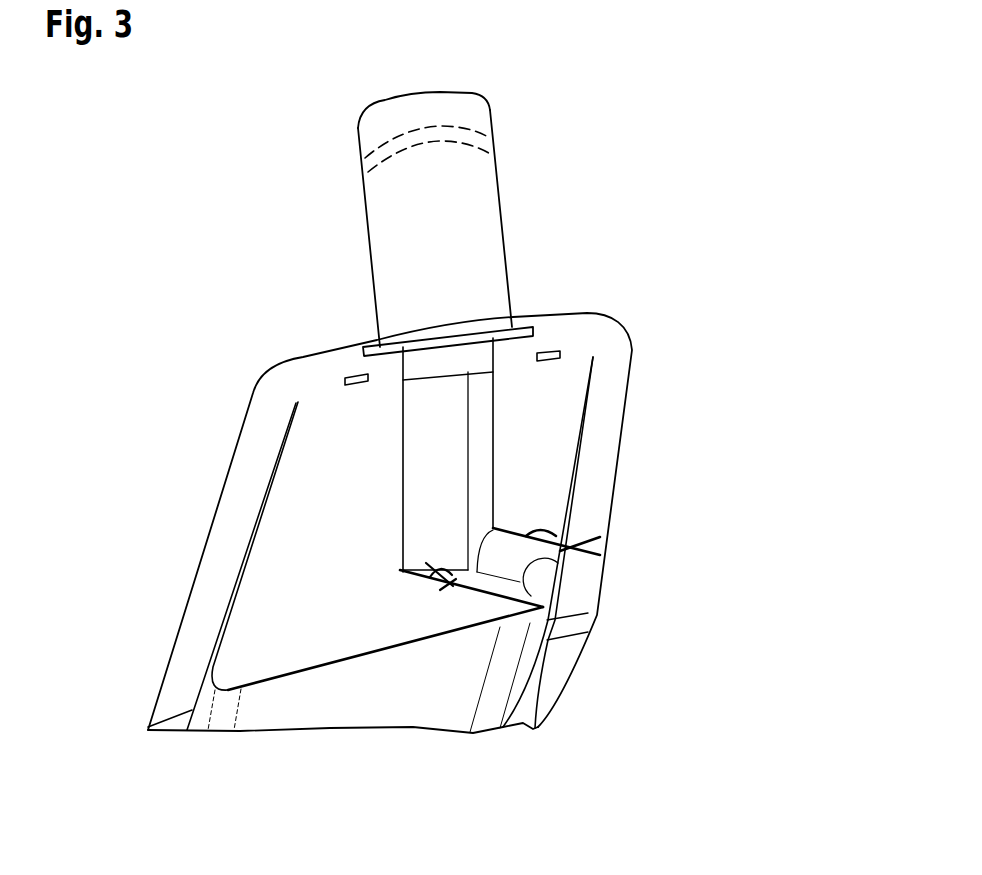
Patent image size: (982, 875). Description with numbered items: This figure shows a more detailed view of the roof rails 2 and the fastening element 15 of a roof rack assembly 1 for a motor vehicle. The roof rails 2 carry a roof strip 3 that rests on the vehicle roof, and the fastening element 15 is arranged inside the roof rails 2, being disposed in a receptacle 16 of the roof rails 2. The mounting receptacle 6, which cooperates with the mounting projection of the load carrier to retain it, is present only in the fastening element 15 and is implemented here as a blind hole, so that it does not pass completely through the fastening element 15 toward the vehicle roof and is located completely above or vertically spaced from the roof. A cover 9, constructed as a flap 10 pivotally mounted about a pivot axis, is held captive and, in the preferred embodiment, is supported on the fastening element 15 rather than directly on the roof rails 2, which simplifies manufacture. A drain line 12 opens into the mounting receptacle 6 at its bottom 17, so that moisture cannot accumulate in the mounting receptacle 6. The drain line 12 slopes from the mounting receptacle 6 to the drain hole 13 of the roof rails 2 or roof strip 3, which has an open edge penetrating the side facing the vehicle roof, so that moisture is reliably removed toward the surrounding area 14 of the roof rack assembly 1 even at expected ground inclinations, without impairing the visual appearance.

The roof rack assembly 1 is at (272, 236).
The roof rails 2 is at (621, 299).
The roof strip 3 is at (620, 362).
The mounting receptacle 6 is at (480, 473).
The cover 9 is at (487, 204).
The flap 10 is at (475, 110).
The drain line 12 is at (515, 548).
The drain hole 13 is at (575, 598).
The surrounding area 14 is at (632, 680).
The fastening element 15 is at (552, 447).
The receptacle 16 is at (592, 413).
The bottom 17 is at (450, 590).